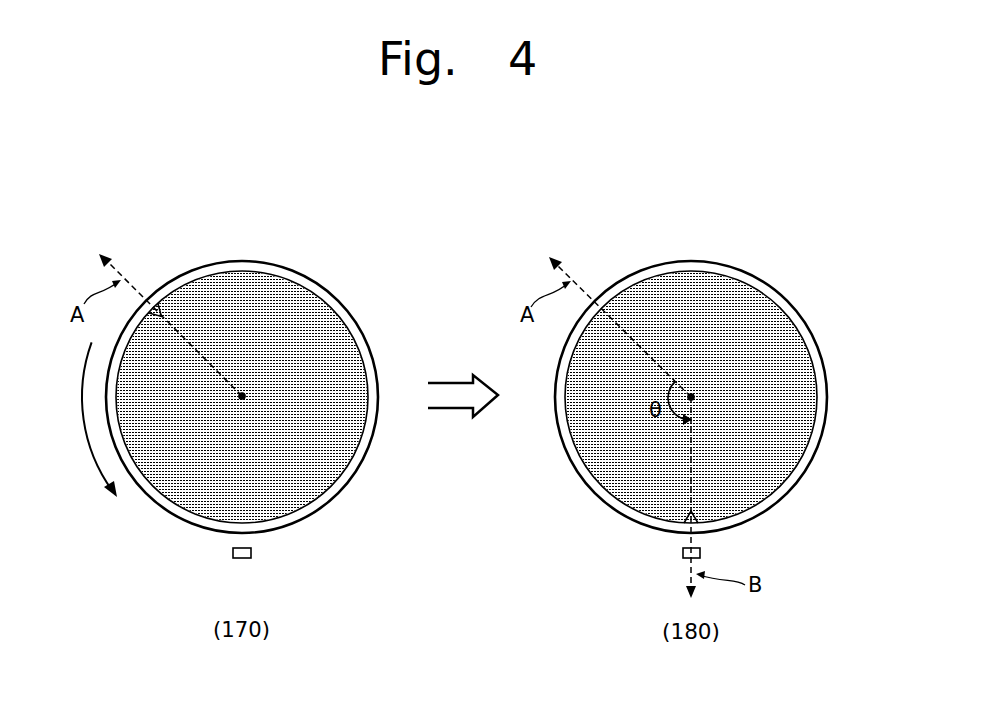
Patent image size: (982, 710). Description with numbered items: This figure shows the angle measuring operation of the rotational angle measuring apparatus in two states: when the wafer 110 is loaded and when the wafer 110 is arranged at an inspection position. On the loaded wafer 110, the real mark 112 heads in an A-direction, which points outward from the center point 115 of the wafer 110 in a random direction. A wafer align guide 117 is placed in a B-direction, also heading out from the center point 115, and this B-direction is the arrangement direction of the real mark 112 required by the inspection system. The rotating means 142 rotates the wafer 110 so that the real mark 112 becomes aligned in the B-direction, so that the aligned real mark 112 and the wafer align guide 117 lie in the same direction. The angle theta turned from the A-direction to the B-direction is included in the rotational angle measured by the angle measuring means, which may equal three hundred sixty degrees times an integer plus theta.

The wafer 110 is at (233, 287).
The real mark 112 is at (161, 316).
The center point 115 is at (242, 396).
The wafer align guide 117 is at (251, 553).
The rotating means 142 is at (298, 268).